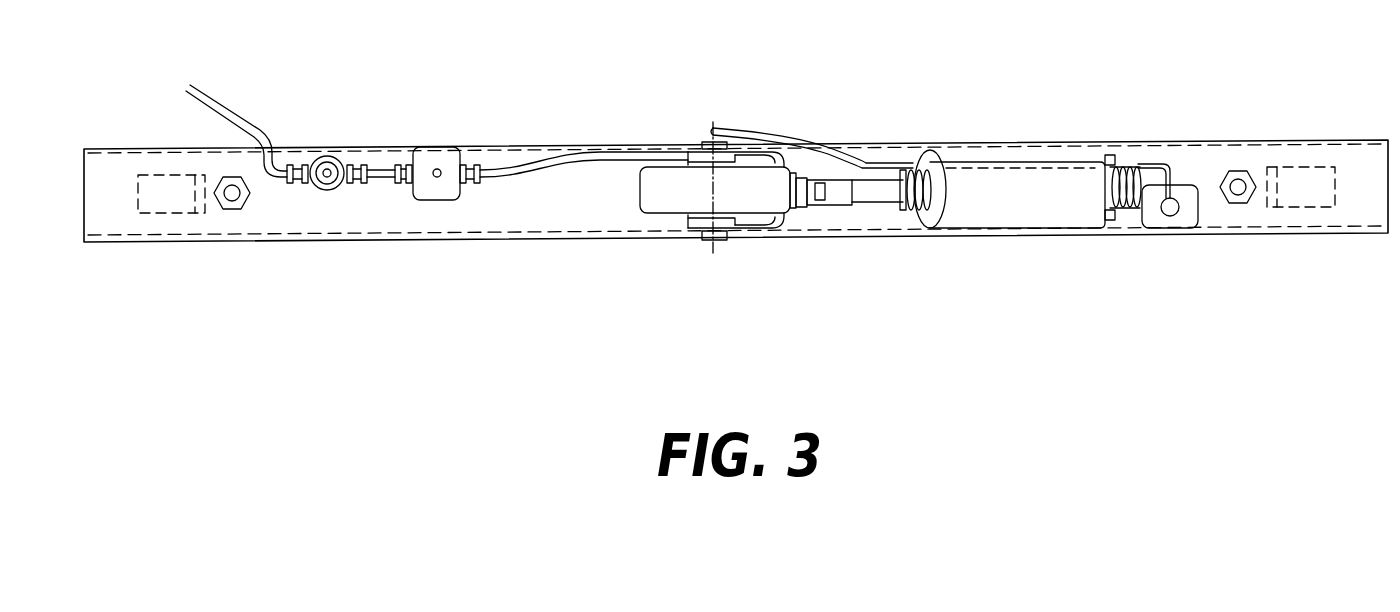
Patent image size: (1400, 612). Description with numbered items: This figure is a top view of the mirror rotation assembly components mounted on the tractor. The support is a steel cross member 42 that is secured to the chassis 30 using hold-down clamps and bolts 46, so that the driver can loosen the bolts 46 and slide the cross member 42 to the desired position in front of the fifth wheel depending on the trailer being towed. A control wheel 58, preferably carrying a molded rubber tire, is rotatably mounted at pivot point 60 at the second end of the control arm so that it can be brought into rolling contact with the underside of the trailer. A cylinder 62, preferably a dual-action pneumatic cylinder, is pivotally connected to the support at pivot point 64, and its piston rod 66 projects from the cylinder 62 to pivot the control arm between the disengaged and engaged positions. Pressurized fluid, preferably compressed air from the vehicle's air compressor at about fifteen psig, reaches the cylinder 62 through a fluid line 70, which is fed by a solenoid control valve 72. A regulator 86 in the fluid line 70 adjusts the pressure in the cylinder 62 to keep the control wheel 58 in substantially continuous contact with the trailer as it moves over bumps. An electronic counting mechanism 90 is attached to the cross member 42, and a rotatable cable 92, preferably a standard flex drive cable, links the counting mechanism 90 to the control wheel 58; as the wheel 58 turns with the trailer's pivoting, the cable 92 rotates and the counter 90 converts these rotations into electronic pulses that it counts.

The chassis 30 is at (297, 217).
The cross member 42 is at (400, 233).
The bolts 46 is at (227, 205).
The control wheel 58 is at (657, 203).
The pivot point 60 is at (712, 258).
The cylinder 62 is at (997, 210).
The pivot point 64 is at (1110, 220).
The piston rod 66 is at (872, 197).
The fluid line 70 is at (578, 158).
The solenoid control valve 72 is at (456, 138).
The regulator 86 is at (328, 157).
The electronic counting mechanism 90 is at (1185, 175).
The rotatable cable 92 is at (779, 128).